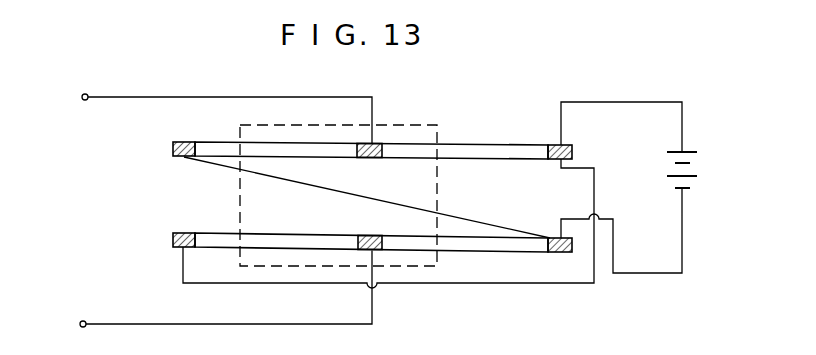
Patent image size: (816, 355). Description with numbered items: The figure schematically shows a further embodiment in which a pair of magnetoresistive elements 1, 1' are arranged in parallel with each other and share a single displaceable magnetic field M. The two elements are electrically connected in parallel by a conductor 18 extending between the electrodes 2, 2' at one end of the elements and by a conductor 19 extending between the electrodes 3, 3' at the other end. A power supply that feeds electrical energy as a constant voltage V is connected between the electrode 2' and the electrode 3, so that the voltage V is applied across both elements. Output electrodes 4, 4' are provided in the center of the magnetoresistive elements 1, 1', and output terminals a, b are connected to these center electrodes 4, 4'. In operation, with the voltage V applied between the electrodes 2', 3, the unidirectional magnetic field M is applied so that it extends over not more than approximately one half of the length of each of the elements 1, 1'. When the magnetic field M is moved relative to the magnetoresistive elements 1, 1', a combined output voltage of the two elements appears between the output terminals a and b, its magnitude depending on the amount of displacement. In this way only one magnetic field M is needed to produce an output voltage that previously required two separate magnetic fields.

The magnetoresistive element 1 is at (371, 130).
The magnetoresistive element 1' is at (371, 273).
The electrode 2 is at (165, 155).
The electrode 2' is at (561, 276).
The electrode 3 is at (549, 135).
The electrode 3' is at (176, 222).
The output electrode 4 is at (376, 166).
The output electrode 4' is at (357, 224).
The conductor 18 is at (359, 196).
The conductor 19 is at (595, 194).
The magnetic field M is at (236, 128).
The constant voltage V is at (639, 187).
The output terminal a is at (218, 113).
The output terminal b is at (216, 293).